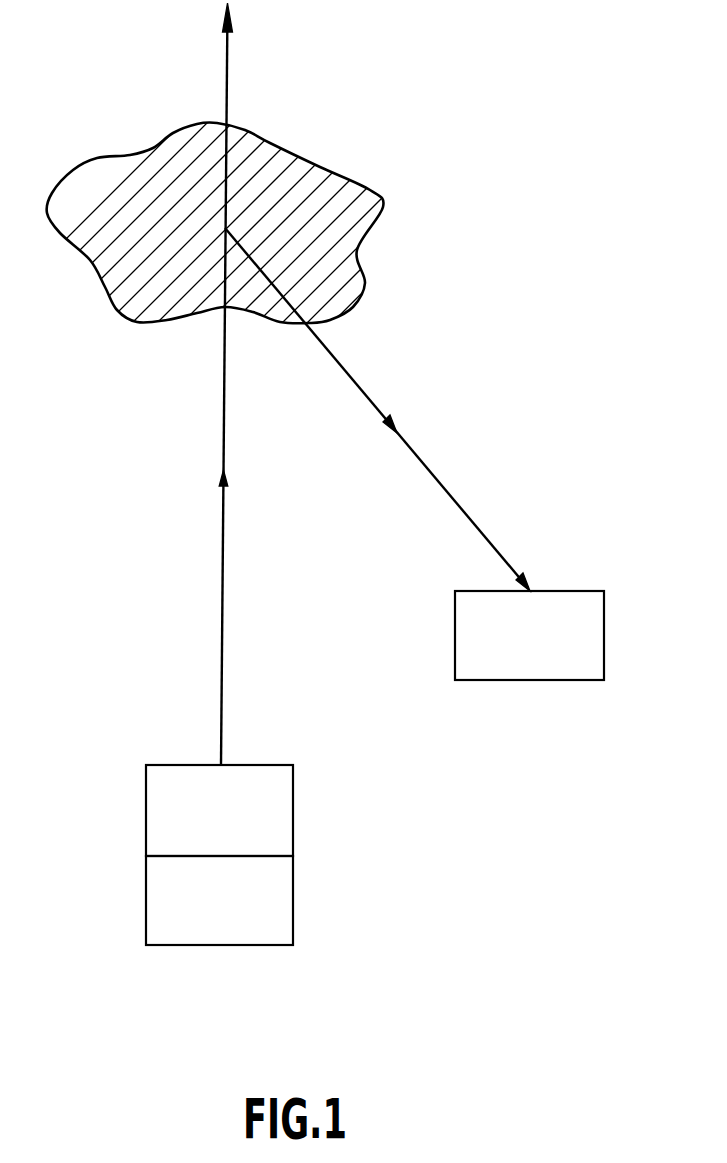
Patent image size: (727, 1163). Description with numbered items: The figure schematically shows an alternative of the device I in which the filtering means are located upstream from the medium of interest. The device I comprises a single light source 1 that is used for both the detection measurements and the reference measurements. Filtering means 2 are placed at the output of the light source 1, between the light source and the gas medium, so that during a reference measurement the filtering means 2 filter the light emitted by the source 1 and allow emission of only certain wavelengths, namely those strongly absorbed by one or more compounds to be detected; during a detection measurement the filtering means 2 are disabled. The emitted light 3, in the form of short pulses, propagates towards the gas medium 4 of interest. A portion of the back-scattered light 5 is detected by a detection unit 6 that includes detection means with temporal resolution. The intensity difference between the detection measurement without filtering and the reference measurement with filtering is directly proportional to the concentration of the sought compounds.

The light source 1 is at (230, 917).
The filtering means 2 is at (230, 827).
The emitted light 3 is at (224, 526).
The gas medium 4 is at (383, 198).
The back-scattered light 5 is at (430, 467).
The detection unit 6 is at (540, 647).
The device I is at (493, 867).